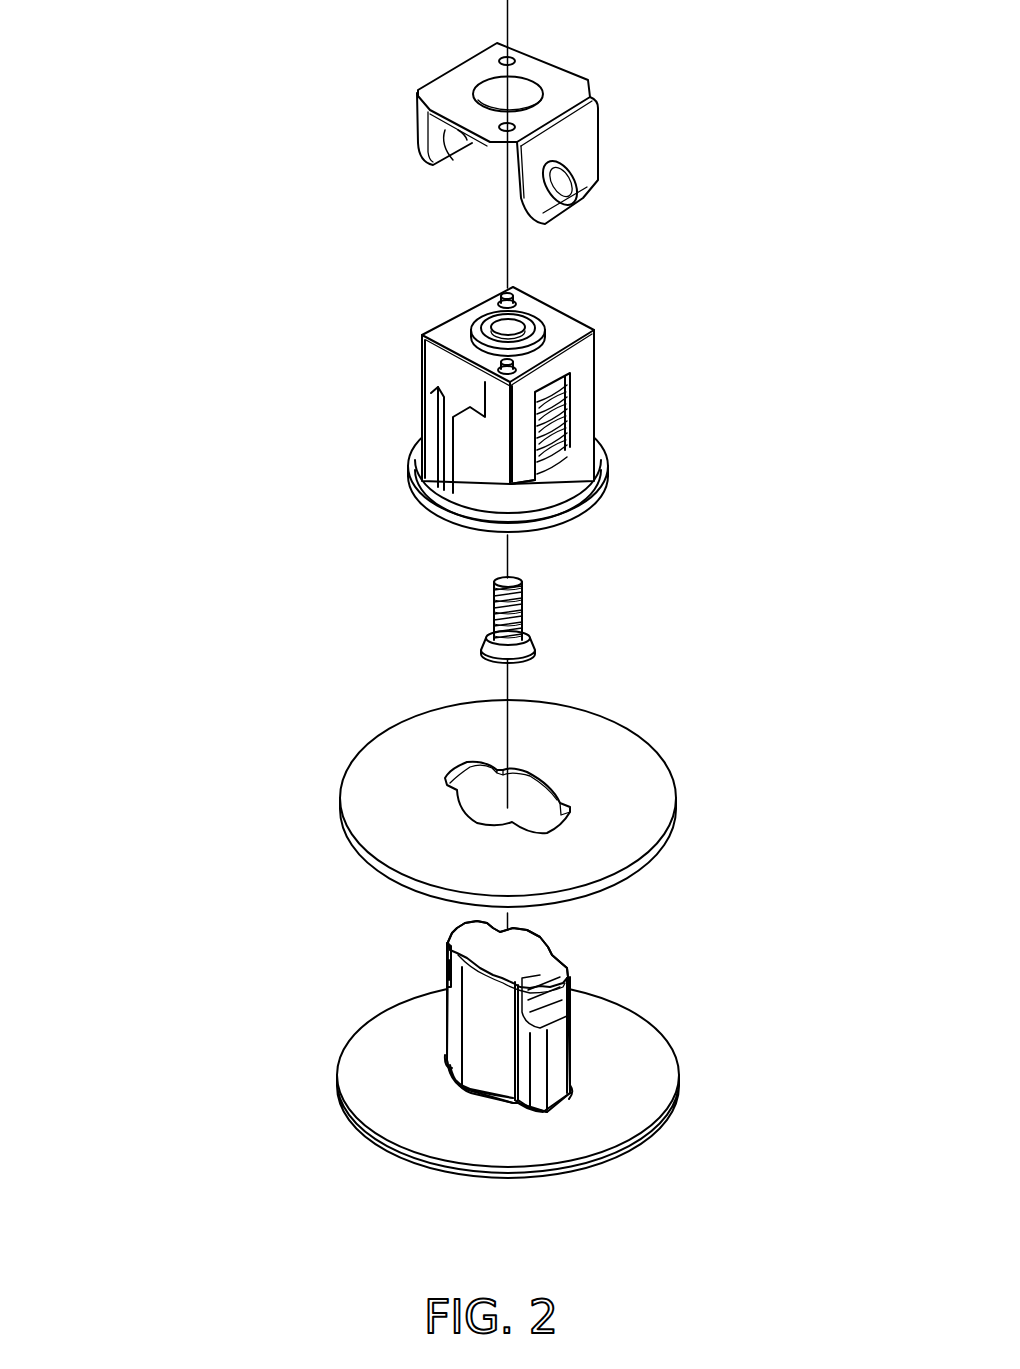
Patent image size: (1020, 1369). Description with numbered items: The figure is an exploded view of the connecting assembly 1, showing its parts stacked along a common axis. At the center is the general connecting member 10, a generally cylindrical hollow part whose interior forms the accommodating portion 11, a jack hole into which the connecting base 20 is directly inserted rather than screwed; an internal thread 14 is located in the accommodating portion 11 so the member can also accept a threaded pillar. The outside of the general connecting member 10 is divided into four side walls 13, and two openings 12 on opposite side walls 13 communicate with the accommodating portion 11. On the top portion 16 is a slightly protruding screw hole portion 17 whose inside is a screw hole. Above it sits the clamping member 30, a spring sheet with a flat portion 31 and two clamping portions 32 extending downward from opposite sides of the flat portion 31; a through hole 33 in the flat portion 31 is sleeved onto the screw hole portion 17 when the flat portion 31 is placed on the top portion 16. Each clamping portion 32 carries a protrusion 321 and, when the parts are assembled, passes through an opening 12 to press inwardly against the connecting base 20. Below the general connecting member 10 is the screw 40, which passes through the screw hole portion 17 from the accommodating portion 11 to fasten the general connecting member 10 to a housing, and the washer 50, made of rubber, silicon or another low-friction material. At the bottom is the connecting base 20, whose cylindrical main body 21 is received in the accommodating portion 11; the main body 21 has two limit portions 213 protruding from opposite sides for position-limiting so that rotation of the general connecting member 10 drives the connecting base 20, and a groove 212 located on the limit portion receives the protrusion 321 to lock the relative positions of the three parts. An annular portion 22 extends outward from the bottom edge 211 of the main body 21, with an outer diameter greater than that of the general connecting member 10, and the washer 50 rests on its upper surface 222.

The connecting assembly 1 is at (174, 95).
The general connecting member 10 is at (505, 414).
The accommodating portion 11 is at (543, 452).
The opening 12 is at (523, 476).
The side wall 13 is at (437, 368).
The internal thread 14 is at (557, 417).
The top portion 16 is at (475, 318).
The screw hole portion 17 is at (520, 322).
The connecting base 20 is at (508, 1058).
The main body 21 is at (498, 1058).
The bottom edge 211 is at (463, 1093).
The groove 212 is at (453, 962).
The limit portion 213 is at (472, 933).
The annular portion 22 is at (511, 1080).
The upper surface 222 is at (365, 1070).
The clamping member 30 is at (506, 116).
The flat portion 31 is at (526, 73).
The clamping portion 32 is at (506, 162).
The protrusion 321 is at (463, 143).
The through hole 33 is at (517, 87).
The screw 40 is at (493, 610).
The washer 50 is at (370, 795).